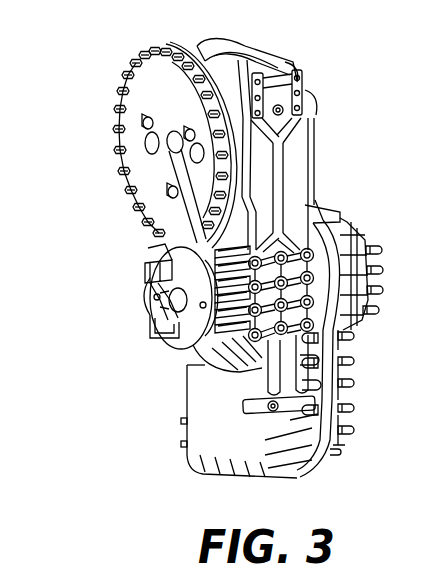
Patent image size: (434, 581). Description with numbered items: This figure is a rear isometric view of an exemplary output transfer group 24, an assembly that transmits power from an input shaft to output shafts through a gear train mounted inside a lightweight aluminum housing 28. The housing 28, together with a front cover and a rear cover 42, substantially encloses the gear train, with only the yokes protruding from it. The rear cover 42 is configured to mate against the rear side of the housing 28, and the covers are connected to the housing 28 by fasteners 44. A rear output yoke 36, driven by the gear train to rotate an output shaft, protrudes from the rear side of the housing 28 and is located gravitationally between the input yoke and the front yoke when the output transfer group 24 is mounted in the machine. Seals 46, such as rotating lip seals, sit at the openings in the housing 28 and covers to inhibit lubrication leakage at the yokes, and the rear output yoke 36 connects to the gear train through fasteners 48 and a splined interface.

The output transfer group 24 is at (262, 258).
The housing 28 is at (227, 50).
The rear output yoke 36 is at (148, 268).
The rear cover 42 is at (137, 137).
The fasteners 44 is at (128, 80).
The seals 46 is at (180, 350).
The fasteners 48 is at (170, 301).